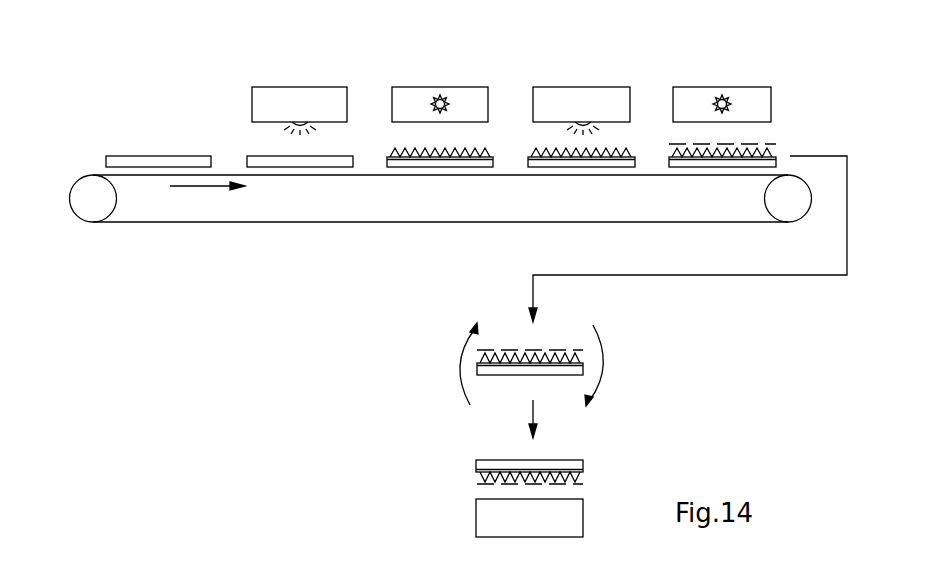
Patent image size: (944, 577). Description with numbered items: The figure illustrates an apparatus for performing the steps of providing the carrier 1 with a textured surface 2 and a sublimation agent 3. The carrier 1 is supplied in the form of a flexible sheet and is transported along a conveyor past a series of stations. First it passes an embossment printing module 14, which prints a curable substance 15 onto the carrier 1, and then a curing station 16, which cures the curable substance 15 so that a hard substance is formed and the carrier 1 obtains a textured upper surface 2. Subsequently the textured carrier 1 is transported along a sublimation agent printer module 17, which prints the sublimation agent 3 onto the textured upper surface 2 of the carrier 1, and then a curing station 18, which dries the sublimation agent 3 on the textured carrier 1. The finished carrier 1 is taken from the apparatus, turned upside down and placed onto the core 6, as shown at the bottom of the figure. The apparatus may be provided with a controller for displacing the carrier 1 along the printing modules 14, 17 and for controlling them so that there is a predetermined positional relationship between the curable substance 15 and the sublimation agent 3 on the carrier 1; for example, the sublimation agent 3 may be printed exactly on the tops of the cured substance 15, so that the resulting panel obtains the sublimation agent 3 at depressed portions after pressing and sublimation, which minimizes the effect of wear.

The carrier 1 is at (146, 168).
The textured upper surface 2 is at (401, 151).
The sublimation agent 3 is at (581, 150).
The core 6 is at (577, 517).
The embossment printing module 14 is at (299, 100).
The curable substance 15 is at (299, 132).
The curing station 16 is at (425, 98).
The sublimation agent printer module 17 is at (561, 100).
The curing station 18 is at (702, 100).